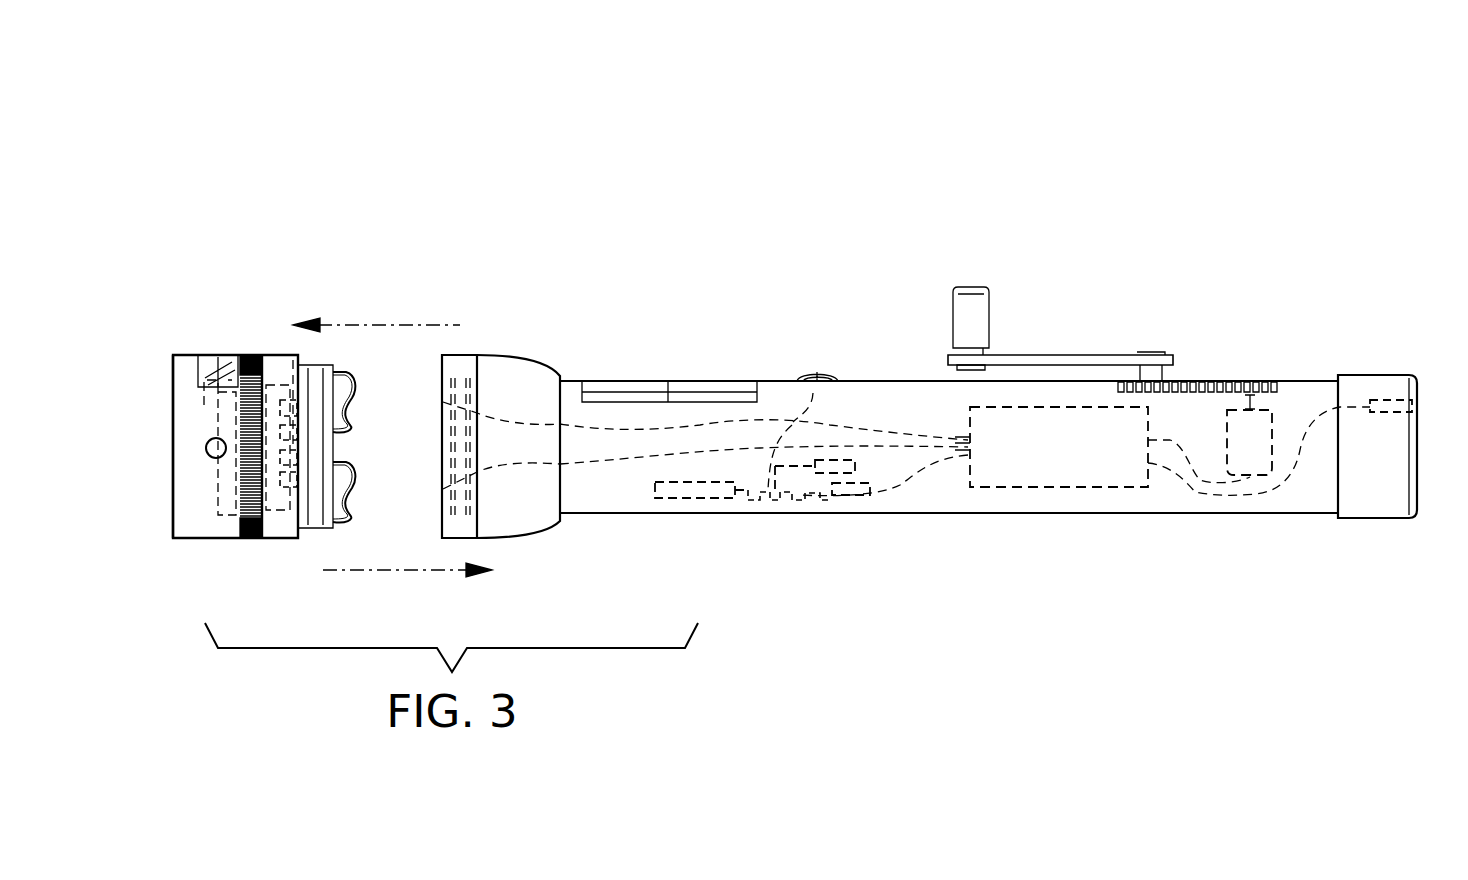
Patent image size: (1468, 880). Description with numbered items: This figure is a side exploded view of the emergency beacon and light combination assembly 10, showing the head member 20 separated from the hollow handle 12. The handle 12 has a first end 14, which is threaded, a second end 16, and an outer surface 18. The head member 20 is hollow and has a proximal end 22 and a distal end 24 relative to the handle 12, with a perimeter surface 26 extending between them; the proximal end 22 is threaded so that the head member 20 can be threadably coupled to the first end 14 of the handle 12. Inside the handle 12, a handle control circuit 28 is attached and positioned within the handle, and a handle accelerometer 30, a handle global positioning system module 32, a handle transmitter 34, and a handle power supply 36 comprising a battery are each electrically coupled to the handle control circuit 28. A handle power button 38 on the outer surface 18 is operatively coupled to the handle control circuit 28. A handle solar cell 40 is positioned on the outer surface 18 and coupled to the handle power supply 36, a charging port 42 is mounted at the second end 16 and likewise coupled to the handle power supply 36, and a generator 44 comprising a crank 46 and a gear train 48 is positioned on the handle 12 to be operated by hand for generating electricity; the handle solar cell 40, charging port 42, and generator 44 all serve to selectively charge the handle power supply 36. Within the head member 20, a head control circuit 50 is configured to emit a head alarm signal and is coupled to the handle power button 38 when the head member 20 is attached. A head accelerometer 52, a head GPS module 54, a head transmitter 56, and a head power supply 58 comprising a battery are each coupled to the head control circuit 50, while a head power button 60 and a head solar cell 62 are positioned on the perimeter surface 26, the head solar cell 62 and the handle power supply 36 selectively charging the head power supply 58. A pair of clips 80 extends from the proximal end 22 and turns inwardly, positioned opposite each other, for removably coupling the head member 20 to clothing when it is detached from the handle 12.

The emergency beacon and light combination assembly 10 is at (760, 218).
The hollow handle 12 is at (912, 382).
The first end 14 is at (441, 356).
The second end 16 is at (1418, 450).
The outer surface 18 is at (965, 513).
The head member 20 is at (190, 538).
The proximal end 22 is at (332, 445).
The distal end 24 is at (173, 432).
The perimeter surface 26 is at (183, 366).
The handle control circuit 28 is at (785, 495).
The handle accelerometer 30 is at (688, 490).
The handle global positioning system module 32 is at (840, 483).
The handle transmitter 34 is at (866, 385).
The handle power supply 36 is at (1052, 470).
The handle power button 38 is at (811, 372).
The handle solar cell 40 is at (631, 383).
The charging port 42 is at (1400, 405).
The generator 44 is at (1256, 435).
The crank 46 is at (1046, 360).
The gear train 48 is at (1207, 390).
The head control circuit 50 is at (292, 360).
The head accelerometer 52 is at (328, 450).
The head GPS module 54 is at (327, 450).
The head transmitter 56 is at (293, 450).
The head power supply 58 is at (228, 430).
The head power button 60 is at (205, 452).
The head solar cell 62 is at (213, 363).
The pair of clips 80 is at (347, 395).